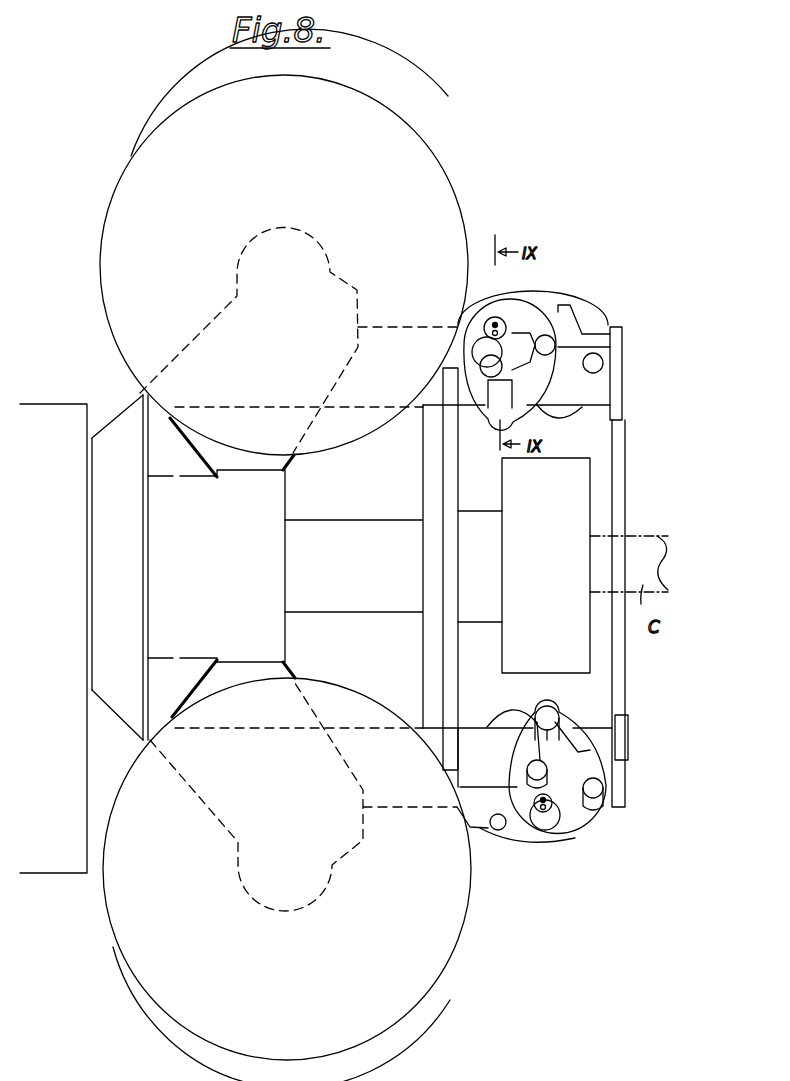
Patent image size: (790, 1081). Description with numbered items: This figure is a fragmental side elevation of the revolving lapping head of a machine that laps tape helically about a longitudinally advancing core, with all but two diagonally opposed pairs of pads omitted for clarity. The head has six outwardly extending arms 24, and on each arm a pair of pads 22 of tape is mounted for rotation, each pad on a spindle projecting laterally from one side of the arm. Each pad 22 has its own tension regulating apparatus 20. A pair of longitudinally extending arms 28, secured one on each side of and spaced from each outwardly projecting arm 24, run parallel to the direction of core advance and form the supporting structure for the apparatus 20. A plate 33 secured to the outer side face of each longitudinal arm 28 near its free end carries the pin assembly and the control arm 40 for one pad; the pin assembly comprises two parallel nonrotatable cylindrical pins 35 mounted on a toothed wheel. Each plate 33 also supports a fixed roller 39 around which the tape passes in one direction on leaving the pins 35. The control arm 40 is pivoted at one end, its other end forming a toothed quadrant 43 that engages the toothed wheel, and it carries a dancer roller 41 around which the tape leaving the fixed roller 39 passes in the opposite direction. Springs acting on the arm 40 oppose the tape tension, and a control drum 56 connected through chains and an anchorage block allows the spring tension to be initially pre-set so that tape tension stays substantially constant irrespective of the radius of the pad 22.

The tension regulating apparatus 20 is at (600, 292).
The pad 22 is at (433, 178).
The outwardly extending arm 24 is at (190, 343).
The longitudinally extending arm 28 is at (598, 395).
The plate 33 is at (542, 385).
The cylindrical pin 35 is at (495, 317).
The fixed roller 39 is at (545, 335).
The control arm 40 is at (563, 782).
The dancer roller 41 is at (473, 353).
The toothed quadrant 43 is at (530, 792).
The control drum 56 is at (596, 353).